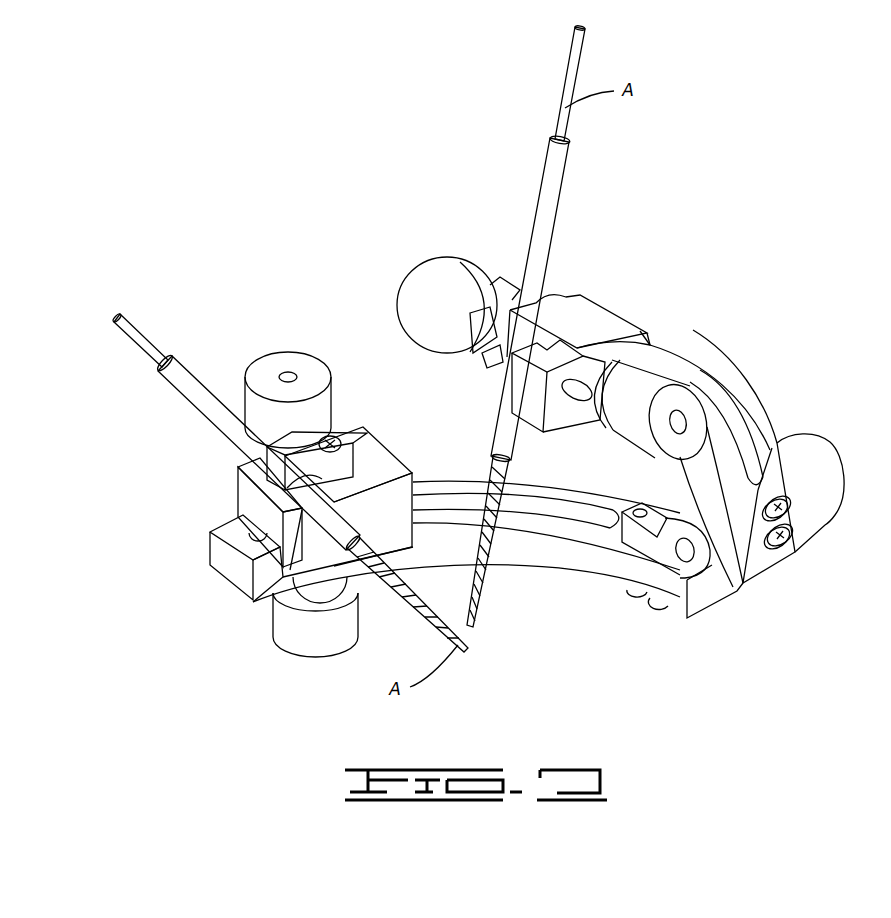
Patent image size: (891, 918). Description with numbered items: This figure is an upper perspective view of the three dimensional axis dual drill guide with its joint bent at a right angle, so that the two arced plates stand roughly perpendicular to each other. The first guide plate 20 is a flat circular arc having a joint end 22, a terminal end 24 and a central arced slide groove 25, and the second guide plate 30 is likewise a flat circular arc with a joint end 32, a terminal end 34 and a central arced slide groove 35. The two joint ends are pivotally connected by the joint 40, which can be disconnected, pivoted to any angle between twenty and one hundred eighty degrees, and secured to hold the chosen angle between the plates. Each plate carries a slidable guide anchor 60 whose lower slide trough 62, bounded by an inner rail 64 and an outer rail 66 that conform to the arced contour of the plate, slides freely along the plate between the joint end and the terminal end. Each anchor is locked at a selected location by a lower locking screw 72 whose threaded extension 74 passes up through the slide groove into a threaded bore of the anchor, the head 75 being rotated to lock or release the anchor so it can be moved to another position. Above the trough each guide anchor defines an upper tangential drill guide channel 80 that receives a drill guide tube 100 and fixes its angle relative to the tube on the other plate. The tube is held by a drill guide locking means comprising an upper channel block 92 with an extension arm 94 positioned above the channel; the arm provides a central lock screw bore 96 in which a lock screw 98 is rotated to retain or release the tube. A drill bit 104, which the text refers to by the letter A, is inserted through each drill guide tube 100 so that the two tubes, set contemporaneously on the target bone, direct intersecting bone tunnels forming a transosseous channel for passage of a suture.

The first guide plate 20 is at (566, 566).
The joint end 22 is at (676, 597).
The terminal end 24 is at (222, 548).
The central arced slide groove 25 is at (553, 508).
The second guide plate 30 is at (742, 390).
The joint end 32 is at (760, 560).
The terminal end 34 is at (551, 418).
The central arced slide groove 35 is at (738, 443).
The joint 40 is at (703, 597).
The slidable guide anchor 60 is at (367, 450).
The lower slide trough 62 is at (238, 490).
The inner rail 64 is at (253, 588).
The outer rail 66 is at (644, 336).
The lower locking screw 72 is at (628, 440).
The threaded extension 74 is at (640, 331).
The head 75 is at (690, 393).
The upper tangential drill guide channel 80 is at (275, 605).
The upper channel block 92 is at (510, 277).
The extension arm 94 is at (487, 345).
The central lock screw bore 96 is at (500, 362).
The lock screw 98 is at (412, 317).
The drill guide tube 100 is at (187, 400).
The drill bit 104 is at (357, 560).